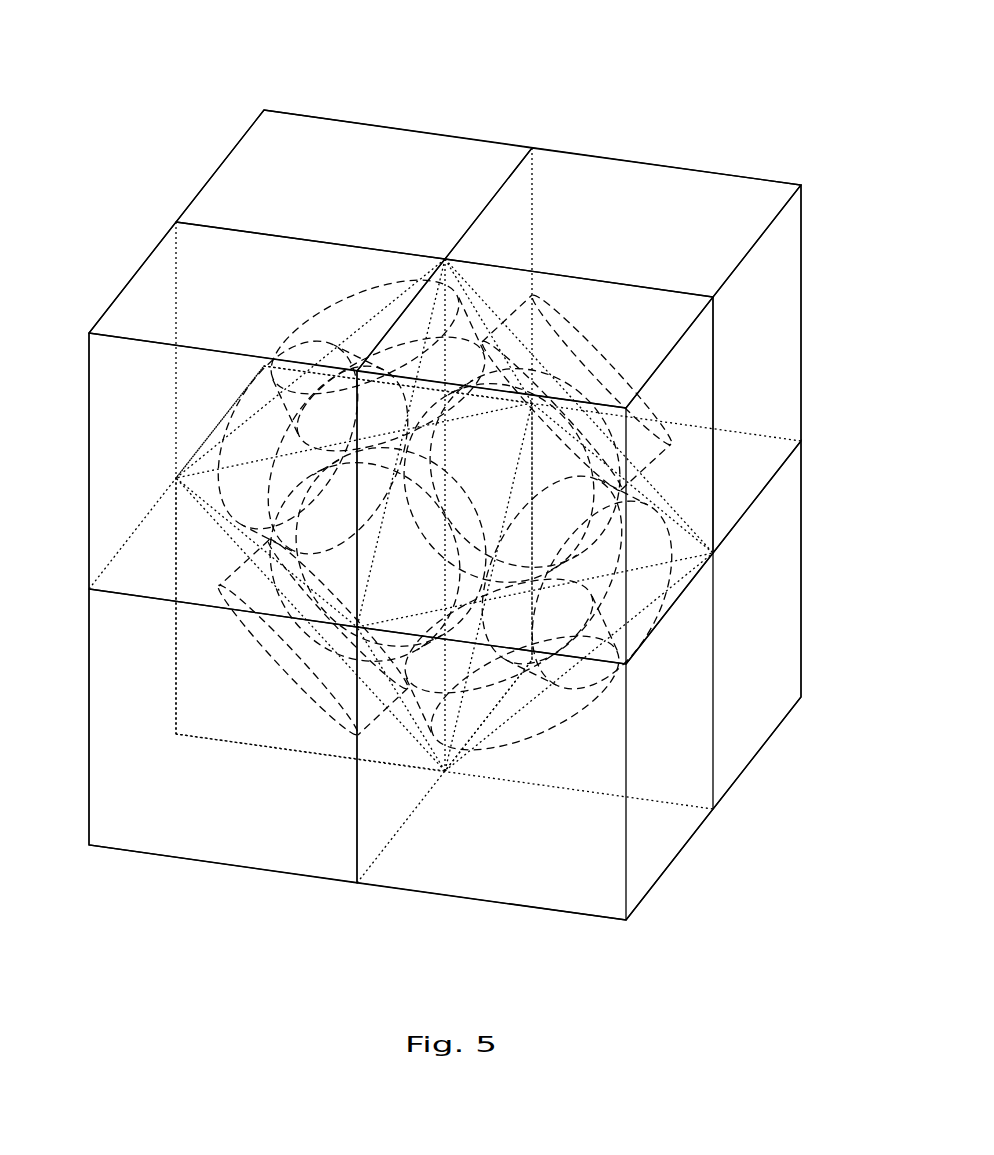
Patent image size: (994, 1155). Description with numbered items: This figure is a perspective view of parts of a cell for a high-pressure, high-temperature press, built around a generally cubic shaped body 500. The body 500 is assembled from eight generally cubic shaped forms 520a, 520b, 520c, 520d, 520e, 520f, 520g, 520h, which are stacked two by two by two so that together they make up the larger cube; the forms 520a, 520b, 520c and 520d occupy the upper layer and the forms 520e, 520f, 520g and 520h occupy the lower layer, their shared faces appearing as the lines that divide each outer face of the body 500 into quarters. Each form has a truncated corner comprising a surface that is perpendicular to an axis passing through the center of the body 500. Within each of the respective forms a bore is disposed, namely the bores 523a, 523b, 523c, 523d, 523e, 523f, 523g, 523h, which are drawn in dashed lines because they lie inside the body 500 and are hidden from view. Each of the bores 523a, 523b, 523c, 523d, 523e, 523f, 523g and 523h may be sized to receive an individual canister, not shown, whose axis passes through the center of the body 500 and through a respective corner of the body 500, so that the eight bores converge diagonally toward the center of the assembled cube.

The generally cubic shaped body 500 is at (168, 100).
The generally cubic shaped form 520a is at (308, 170).
The generally cubic shaped form 520b is at (663, 208).
The generally cubic shaped form 520c is at (690, 470).
The generally cubic shaped form 520d is at (160, 300).
The generally cubic shaped form 520e is at (343, 568).
The generally cubic shaped form 520f is at (758, 710).
The generally cubic shaped form 520g is at (572, 890).
The generally cubic shaped form 520h is at (163, 823).
The bore 523a is at (347, 297).
The bore 523b is at (610, 347).
The bore 523c is at (613, 455).
The bore 523d is at (228, 413).
The bore 523e is at (297, 530).
The bore 523f is at (632, 660).
The bore 523g is at (490, 762).
The bore 523h is at (297, 687).